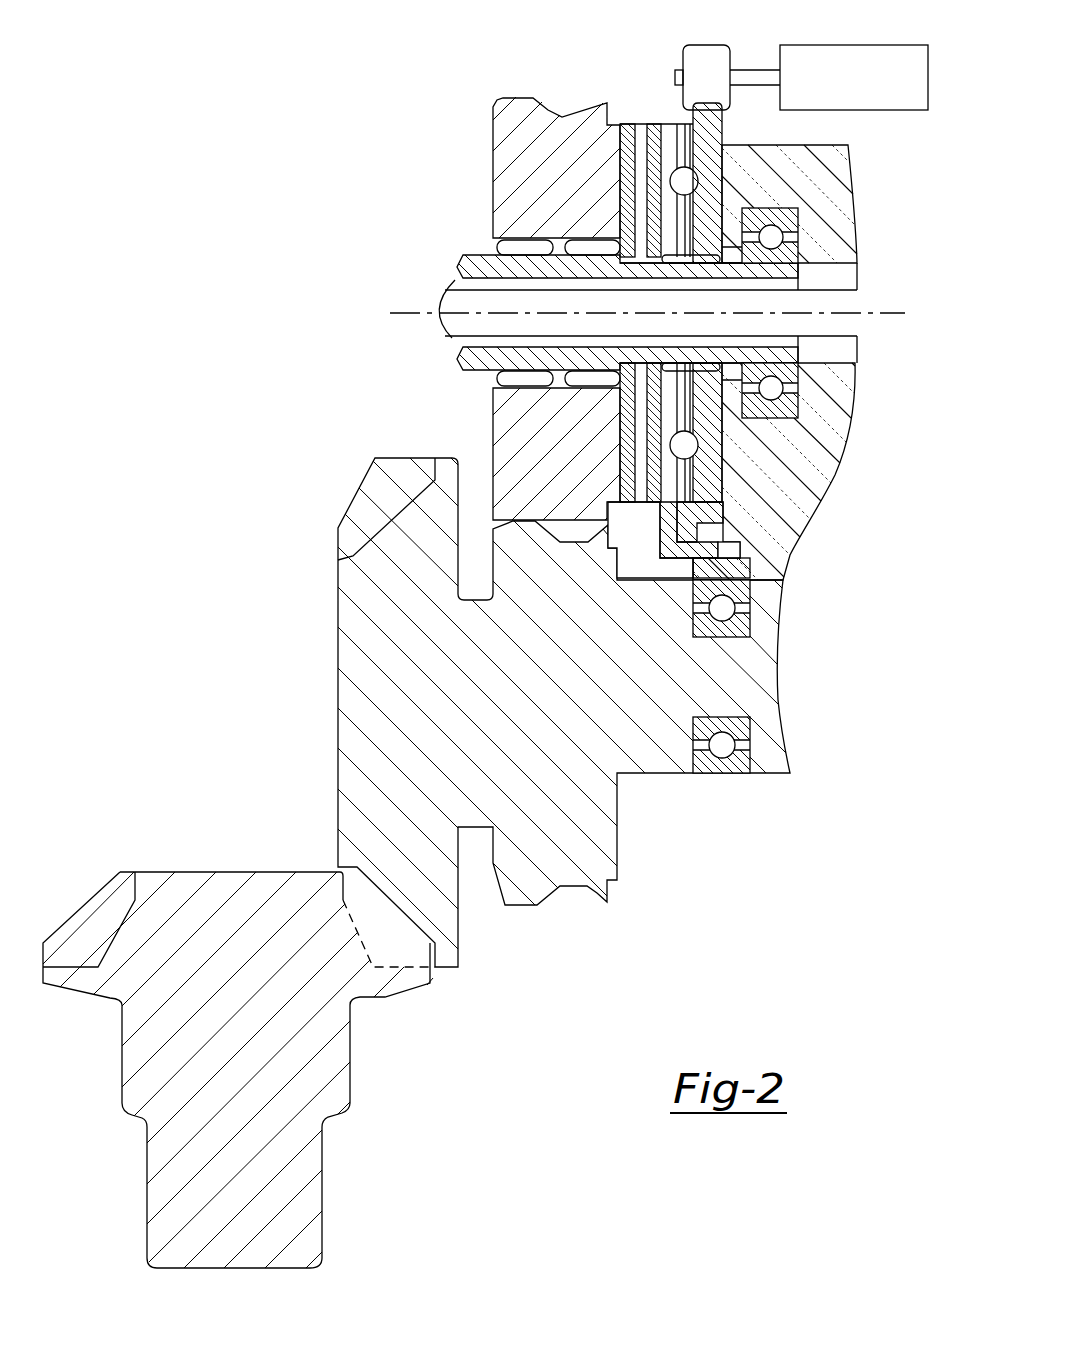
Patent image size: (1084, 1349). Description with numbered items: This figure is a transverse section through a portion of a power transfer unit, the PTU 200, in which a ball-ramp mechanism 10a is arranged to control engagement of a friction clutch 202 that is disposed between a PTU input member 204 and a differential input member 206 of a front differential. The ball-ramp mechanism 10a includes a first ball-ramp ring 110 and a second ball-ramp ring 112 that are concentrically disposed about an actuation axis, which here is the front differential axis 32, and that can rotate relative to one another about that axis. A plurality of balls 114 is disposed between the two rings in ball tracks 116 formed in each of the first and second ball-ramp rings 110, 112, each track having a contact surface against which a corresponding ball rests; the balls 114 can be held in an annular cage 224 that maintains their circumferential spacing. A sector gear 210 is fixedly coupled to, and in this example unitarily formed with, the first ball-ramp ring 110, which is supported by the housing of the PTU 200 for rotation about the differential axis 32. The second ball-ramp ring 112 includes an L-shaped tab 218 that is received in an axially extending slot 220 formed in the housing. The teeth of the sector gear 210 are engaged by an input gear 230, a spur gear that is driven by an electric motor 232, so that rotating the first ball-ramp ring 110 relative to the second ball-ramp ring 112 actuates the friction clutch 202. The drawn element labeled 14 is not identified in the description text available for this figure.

The PTU 200 is at (483, 88).
The friction clutch 202 is at (639, 114).
The PTU input member 204 is at (527, 163).
The differential input member 206 is at (783, 271).
The sector gear 210 is at (712, 115).
The input gear 230 is at (706, 60).
The electric motor 232 is at (876, 60).
The ball-ramp mechanism 10a is at (732, 177).
The housing 14 is at (832, 442).
The front differential axis 32 is at (898, 300).
The first ball-ramp ring 110 is at (706, 489).
The second ball-ramp ring 112 is at (672, 416).
The balls 114 is at (702, 452).
The ball tracks 116 is at (682, 446).
The L-shaped tab 218 is at (693, 548).
The axially extending slot 220 is at (733, 553).
The annular cage 224 is at (684, 393).